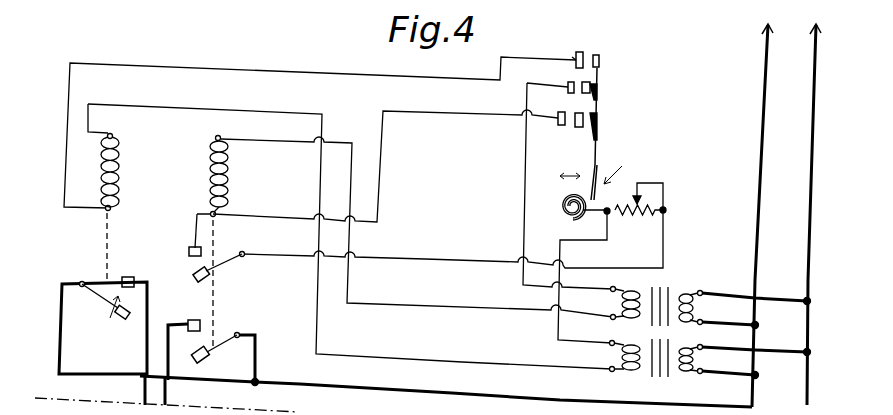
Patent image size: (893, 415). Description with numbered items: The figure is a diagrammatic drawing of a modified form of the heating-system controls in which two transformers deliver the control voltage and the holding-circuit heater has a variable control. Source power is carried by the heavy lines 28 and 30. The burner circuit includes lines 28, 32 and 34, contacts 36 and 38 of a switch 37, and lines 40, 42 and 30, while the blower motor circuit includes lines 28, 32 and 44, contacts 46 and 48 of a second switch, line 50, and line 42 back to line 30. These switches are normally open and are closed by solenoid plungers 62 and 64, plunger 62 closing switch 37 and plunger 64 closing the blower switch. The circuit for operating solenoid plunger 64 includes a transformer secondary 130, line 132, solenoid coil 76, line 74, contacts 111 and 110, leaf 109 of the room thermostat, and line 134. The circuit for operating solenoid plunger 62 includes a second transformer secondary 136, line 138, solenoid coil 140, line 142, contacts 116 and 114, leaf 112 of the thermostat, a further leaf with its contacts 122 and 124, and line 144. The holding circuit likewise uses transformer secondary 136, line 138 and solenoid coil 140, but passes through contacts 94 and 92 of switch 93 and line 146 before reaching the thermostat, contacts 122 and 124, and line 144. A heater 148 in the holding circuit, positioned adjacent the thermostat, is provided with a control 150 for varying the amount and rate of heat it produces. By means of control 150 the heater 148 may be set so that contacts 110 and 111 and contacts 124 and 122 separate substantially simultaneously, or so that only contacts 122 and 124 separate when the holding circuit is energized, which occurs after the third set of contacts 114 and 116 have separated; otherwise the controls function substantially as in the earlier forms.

The line 74 is at (318, 72).
The solenoid coil 76 is at (120, 172).
The solenoid coil 140 is at (230, 178).
The line 142 is at (383, 183).
The line 144 is at (527, 185).
The line 146 is at (425, 259).
The line 138 is at (462, 307).
The line 132 is at (462, 361).
The line 134 is at (574, 241).
The heater 148 is at (624, 223).
The control 150 is at (652, 183).
The contact 124 is at (572, 57).
The contact 111 is at (586, 52).
The contact 110 is at (600, 55).
The contact 122 is at (598, 76).
The leaf 109 is at (591, 88).
The contact 114 is at (584, 114).
The leaf 112 is at (598, 130).
The contact 116 is at (562, 126).
The transformer secondary 136 is at (645, 290).
The transformer secondary 130 is at (628, 372).
The line 28 is at (757, 182).
The line 30 is at (810, 178).
The line 32 is at (452, 392).
The line 50 is at (143, 392).
The line 40 is at (167, 397).
The line 42 is at (103, 328).
The line 44 is at (66, 348).
The contact 46 is at (122, 318).
The contact 48 is at (128, 277).
The solenoid plunger 64 is at (105, 246).
The contact 94 is at (192, 247).
The switch 93 is at (181, 263).
The contact 92 is at (195, 278).
The solenoid plunger 62 is at (217, 243).
The line 34 is at (256, 365).
The contact 36 is at (207, 358).
The switch 37 is at (210, 337).
The contact 38 is at (198, 320).